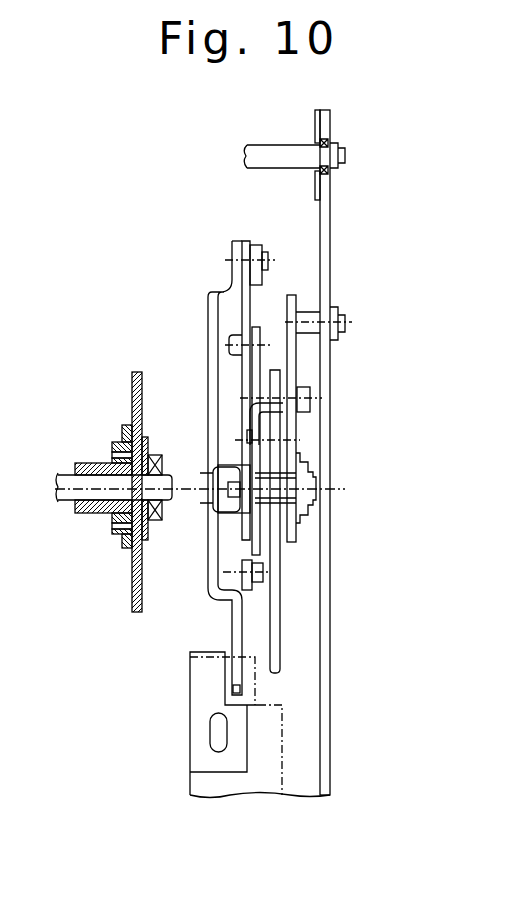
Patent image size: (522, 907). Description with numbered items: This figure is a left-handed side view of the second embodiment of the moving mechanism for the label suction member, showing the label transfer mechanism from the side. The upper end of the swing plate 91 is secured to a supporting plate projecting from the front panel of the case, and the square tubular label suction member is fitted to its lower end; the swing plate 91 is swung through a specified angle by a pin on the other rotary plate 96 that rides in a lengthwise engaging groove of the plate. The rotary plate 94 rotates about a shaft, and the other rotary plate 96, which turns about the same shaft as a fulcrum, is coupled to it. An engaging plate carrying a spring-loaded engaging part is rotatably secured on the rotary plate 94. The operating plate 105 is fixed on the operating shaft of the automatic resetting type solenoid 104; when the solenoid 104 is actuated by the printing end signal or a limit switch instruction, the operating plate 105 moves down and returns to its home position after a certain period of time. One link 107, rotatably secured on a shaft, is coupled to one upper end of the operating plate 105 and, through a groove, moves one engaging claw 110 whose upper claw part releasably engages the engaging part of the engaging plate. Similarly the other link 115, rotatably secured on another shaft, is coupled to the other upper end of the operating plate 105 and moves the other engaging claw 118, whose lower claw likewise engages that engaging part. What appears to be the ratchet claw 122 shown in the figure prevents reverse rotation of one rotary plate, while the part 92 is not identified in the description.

The swing plate 91 is at (330, 578).
The tube 92 is at (273, 152).
The rotary plate 94 is at (277, 525).
The other rotary plate 96 is at (292, 360).
The automatic resetting type solenoid 104 is at (222, 785).
The operating plate 105 is at (207, 597).
The one link 107 is at (243, 540).
The one engaging claw 110 is at (255, 423).
The other link 115 is at (242, 303).
The other engaging claw 118 is at (252, 380).
The plate 122 is at (277, 632).